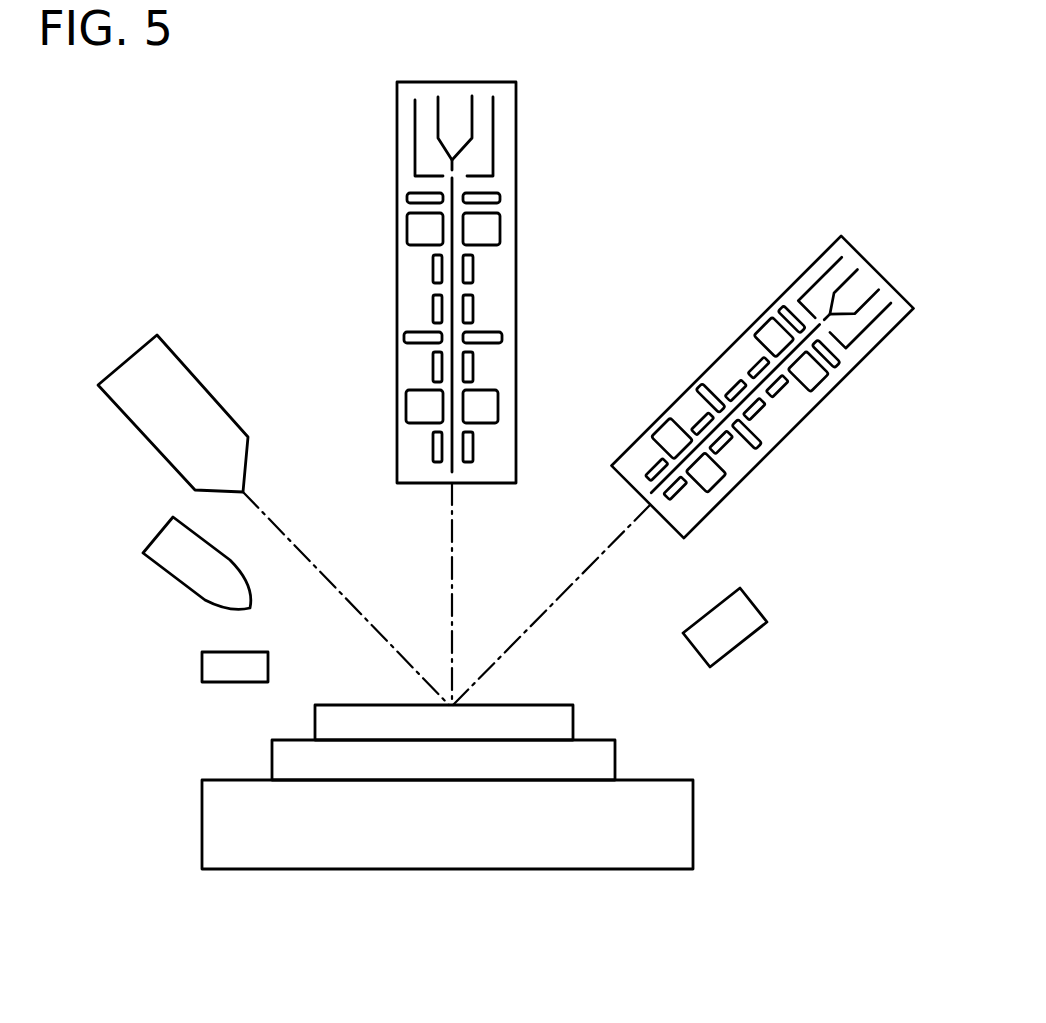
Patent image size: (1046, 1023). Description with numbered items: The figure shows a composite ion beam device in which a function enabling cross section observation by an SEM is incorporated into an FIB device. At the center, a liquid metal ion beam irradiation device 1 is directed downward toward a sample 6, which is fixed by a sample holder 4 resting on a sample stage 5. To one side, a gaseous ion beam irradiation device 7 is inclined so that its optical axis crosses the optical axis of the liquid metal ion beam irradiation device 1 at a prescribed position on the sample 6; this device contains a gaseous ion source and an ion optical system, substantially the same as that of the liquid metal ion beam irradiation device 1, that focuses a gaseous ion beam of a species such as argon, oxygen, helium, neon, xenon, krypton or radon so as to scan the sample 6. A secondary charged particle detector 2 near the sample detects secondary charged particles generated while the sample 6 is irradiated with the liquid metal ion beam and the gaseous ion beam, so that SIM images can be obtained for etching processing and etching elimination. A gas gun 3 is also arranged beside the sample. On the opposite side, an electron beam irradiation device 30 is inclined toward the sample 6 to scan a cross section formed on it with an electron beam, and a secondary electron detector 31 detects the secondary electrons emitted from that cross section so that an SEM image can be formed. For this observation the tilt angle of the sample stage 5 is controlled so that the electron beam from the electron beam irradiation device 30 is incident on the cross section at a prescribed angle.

The liquid metal ion beam irradiation device 1 is at (517, 167).
The gaseous ion beam irradiation device 7 is at (728, 350).
The electron beam irradiation device 30 is at (135, 365).
The gas gun 3 is at (180, 563).
The secondary electron detector 31 is at (205, 672).
The secondary charged particle detector 2 is at (710, 627).
The sample 6 is at (552, 722).
The sample holder 4 is at (602, 760).
The sample stage 5 is at (677, 840).